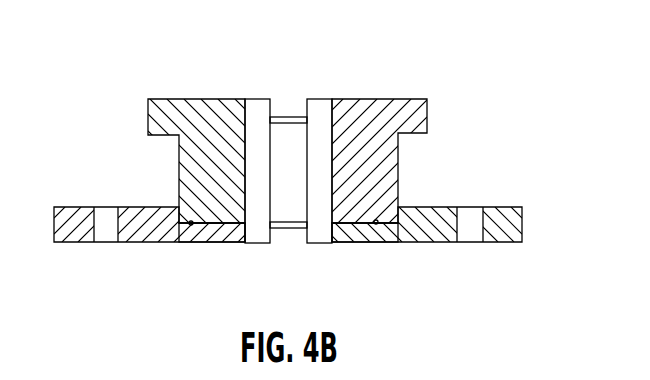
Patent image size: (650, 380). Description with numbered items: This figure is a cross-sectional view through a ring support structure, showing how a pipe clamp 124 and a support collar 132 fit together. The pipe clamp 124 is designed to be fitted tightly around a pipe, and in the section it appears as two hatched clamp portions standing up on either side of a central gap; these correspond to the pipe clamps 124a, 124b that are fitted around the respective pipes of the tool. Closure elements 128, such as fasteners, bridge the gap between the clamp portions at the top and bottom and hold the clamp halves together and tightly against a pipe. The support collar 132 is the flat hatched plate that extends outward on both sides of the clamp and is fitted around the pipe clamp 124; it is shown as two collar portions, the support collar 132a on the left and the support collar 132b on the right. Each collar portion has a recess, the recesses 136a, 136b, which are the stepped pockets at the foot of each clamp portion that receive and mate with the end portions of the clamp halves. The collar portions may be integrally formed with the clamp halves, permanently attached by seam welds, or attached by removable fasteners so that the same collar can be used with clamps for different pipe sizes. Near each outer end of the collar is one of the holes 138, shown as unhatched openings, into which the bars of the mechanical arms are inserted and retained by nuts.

The pipe clamp 124 is at (318, 173).
The pipe clamp 124a is at (192, 97).
The pipe clamp 124b is at (388, 95).
The closure elements 128 is at (287, 114).
The support collar 132 is at (311, 225).
The support collar 132a is at (73, 240).
The support collar 132b is at (500, 243).
The recess 136a is at (191, 224).
The recess 136b is at (376, 223).
The holes 138 is at (95, 216).